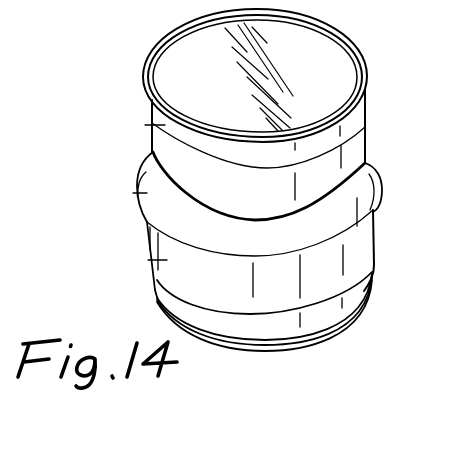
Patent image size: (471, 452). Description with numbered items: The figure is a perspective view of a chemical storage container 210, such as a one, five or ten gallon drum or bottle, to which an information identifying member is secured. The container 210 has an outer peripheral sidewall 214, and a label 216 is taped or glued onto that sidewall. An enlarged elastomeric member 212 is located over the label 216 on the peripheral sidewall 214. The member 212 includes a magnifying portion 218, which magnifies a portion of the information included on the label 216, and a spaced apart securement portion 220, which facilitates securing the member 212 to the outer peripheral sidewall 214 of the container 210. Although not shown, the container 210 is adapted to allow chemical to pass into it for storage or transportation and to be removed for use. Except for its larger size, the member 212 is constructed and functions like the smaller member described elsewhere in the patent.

The container 210 is at (148, 38).
The elastomeric member 212 is at (165, 156).
The outer peripheral sidewall 214 is at (170, 158).
The label 216 is at (138, 173).
The magnifying portion 218 is at (142, 193).
The securement portion 220 is at (160, 260).